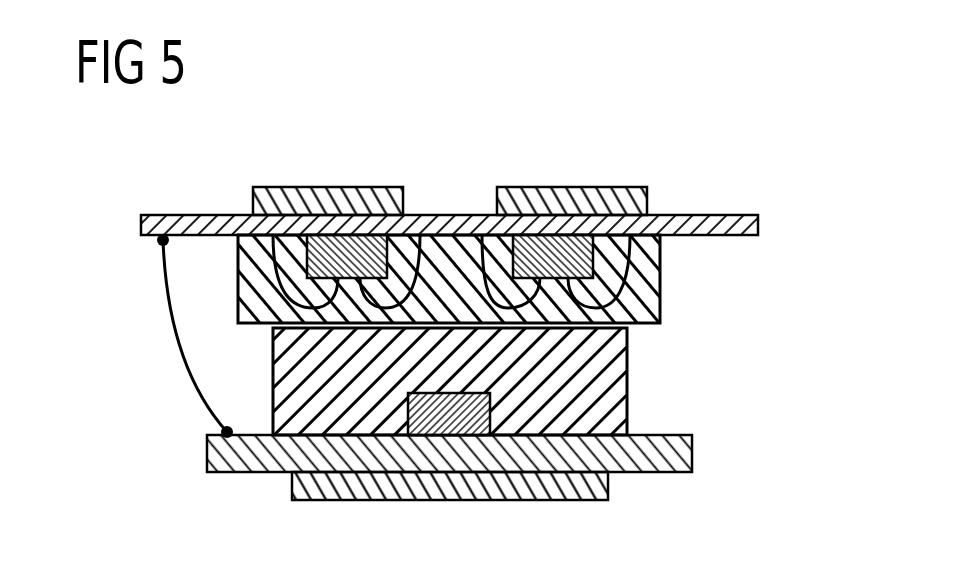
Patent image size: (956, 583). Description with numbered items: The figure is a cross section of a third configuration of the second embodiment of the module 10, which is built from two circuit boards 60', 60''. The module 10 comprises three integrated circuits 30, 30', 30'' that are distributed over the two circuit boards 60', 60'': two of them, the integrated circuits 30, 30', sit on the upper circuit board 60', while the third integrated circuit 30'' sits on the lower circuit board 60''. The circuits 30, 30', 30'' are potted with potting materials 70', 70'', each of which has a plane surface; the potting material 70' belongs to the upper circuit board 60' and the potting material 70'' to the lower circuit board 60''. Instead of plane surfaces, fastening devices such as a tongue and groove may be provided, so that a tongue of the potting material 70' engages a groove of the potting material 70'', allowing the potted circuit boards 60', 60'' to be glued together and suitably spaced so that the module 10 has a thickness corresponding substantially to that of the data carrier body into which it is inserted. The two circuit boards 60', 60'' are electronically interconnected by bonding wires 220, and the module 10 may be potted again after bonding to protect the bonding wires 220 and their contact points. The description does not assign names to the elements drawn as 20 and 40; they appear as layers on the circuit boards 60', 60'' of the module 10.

The module 10 is at (722, 171).
The contact elements 20 is at (497, 208).
The integrated circuit 30 is at (347, 206).
The integrated circuit 30' is at (554, 207).
The integrated circuit 30'' is at (473, 478).
The base plate 40 is at (449, 500).
The circuit board 60' is at (449, 184).
The circuit board 60'' is at (449, 489).
The potting material 70' is at (483, 279).
The potting material 70'' is at (489, 381).
The bonding wires 220 is at (167, 311).